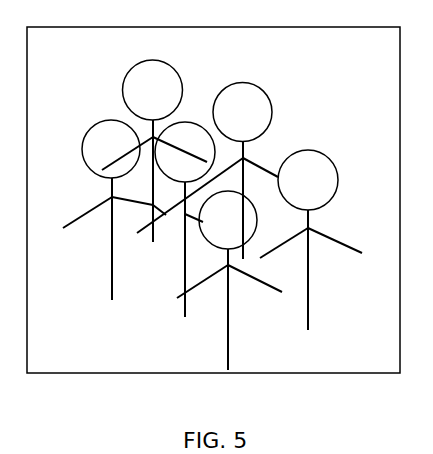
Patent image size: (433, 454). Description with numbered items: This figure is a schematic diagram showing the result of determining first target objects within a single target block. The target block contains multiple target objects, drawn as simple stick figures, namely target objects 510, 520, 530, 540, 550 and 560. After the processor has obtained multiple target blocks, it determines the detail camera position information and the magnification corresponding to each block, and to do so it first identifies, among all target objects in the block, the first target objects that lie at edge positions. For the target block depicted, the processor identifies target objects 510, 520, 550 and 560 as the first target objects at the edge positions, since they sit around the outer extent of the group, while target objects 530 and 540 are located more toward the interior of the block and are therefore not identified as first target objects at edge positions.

The target object 510 is at (108, 210).
The target object 520 is at (147, 151).
The target object 530 is at (185, 211).
The target object 540 is at (209, 164).
The target object 550 is at (229, 280).
The target object 560 is at (311, 228).